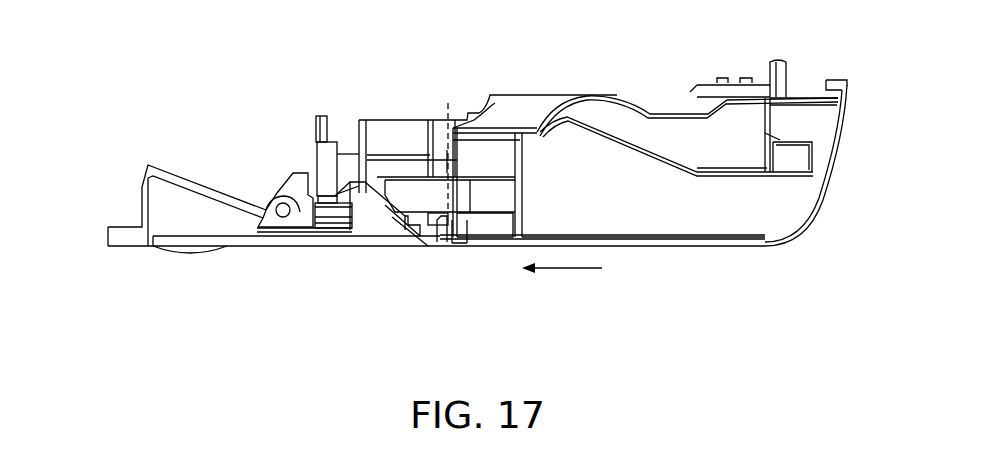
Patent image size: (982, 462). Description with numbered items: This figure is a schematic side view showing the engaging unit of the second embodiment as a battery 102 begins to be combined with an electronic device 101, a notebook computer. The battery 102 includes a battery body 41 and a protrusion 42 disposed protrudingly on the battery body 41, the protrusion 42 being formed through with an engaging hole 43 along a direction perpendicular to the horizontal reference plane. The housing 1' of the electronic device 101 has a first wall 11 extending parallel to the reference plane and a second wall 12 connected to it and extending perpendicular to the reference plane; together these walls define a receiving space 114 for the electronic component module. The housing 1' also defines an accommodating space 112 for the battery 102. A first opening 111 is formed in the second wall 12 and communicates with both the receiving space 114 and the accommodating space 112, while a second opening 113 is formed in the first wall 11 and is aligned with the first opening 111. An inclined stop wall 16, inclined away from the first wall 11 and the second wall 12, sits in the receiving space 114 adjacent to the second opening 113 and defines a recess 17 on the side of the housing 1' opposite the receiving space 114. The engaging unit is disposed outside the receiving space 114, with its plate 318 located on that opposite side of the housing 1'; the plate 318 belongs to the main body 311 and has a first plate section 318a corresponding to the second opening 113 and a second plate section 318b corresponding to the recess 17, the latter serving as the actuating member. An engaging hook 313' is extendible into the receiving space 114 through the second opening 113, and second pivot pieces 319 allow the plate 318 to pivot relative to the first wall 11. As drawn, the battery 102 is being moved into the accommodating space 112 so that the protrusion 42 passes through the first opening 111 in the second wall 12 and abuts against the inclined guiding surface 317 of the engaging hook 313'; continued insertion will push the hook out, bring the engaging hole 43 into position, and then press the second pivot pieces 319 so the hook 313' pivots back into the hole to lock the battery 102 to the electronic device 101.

The housing 1' is at (85, 175).
The electronic device 101 is at (100, 239).
The battery 102 is at (804, 237).
The first wall 11 is at (128, 239).
The second wall 12 is at (447, 147).
The inclined stop wall 16 is at (215, 197).
The recess 17 is at (167, 197).
The battery body 41 is at (660, 241).
The protrusion 42 is at (488, 187).
The engaging hole 43 is at (424, 213).
The first opening 111 is at (443, 239).
The accommodating space 112 is at (537, 115).
The second opening 113 is at (397, 223).
The receiving space 114 is at (258, 187).
The main body 311 is at (258, 255).
The engaging hook 313' is at (377, 268).
The inclined guiding surface 317 is at (383, 195).
The plate 318 is at (247, 238).
The first plate section 318a is at (332, 238).
The second plate section 318b is at (192, 244).
The second pivot piece 319 is at (300, 183).